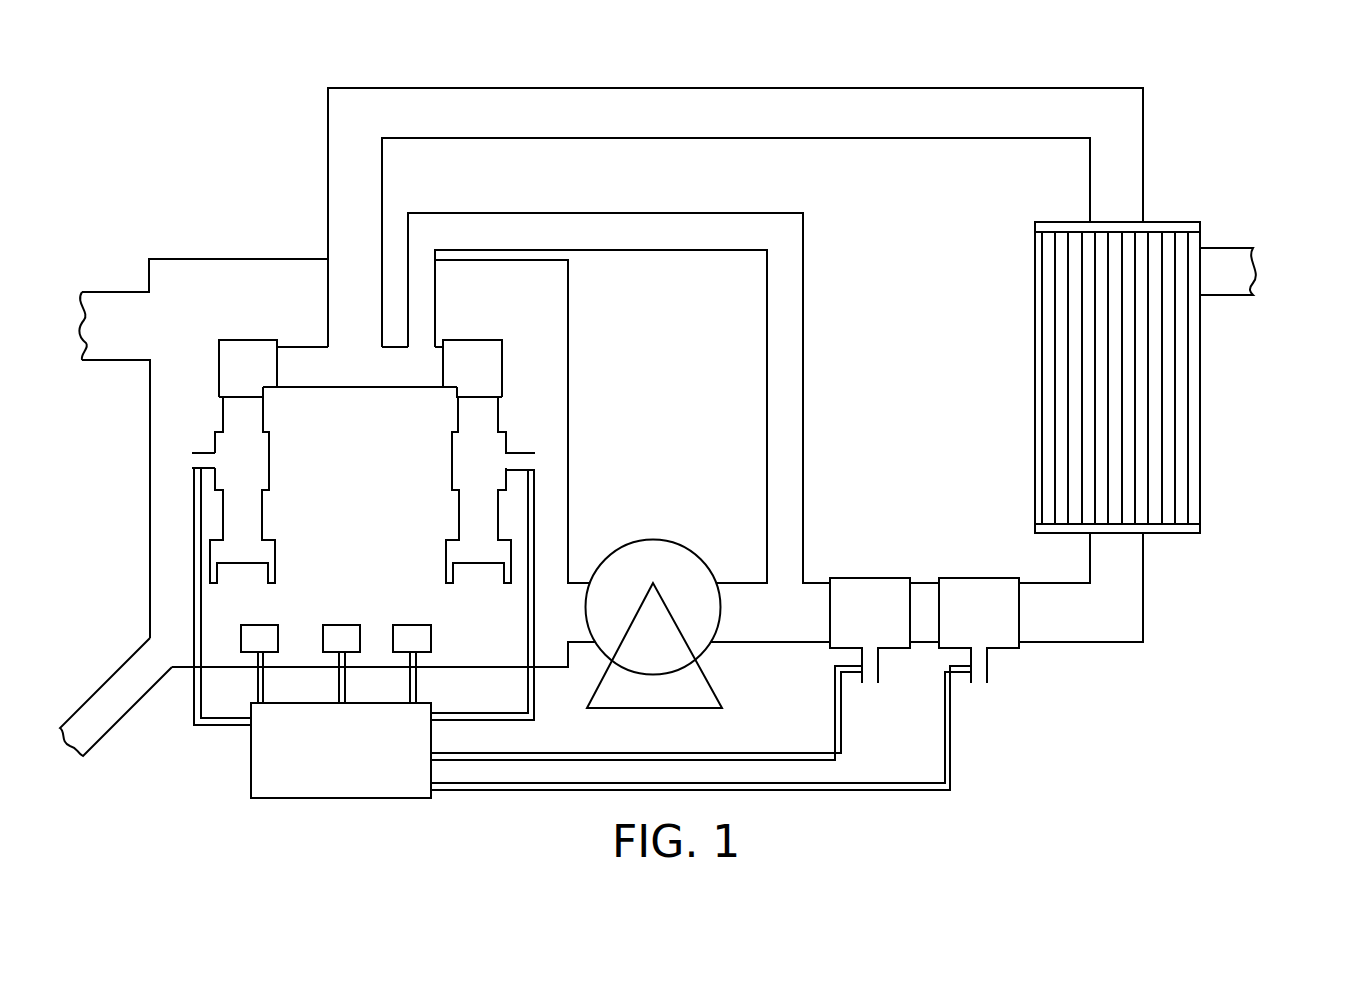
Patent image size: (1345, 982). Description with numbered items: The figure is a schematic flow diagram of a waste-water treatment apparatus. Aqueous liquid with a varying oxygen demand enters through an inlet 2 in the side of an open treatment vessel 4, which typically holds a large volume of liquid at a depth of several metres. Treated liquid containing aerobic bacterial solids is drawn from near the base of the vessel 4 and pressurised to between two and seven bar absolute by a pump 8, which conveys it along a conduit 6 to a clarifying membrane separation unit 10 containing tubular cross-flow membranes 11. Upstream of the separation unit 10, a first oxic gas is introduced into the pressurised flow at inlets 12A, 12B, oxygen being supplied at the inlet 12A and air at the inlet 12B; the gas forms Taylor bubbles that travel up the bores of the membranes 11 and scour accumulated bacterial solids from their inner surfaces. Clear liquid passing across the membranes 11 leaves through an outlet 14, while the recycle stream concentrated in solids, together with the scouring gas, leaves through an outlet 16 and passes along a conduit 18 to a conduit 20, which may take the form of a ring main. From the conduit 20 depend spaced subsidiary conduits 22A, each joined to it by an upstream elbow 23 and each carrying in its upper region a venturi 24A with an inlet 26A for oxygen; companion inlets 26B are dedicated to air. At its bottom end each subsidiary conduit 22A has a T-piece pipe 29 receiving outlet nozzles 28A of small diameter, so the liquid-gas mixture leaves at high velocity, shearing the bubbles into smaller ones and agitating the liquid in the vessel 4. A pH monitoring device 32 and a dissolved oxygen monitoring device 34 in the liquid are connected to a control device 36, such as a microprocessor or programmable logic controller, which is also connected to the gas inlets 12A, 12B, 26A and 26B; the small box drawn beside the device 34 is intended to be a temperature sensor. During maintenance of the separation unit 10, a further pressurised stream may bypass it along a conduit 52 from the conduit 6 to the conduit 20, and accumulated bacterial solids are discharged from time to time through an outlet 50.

The inlet 2 is at (92, 318).
The treatment vessel 4 is at (148, 498).
The conduit 6 is at (762, 627).
The pump 8 is at (668, 556).
The membrane separation unit 10 is at (1200, 387).
The tubular membranes 11 is at (1183, 462).
The inlet 12A is at (873, 665).
The inlet 12B is at (983, 663).
The outlet 14 is at (1240, 273).
The outlet 16 is at (1120, 222).
The conduit 18 is at (704, 105).
The conduit 20 is at (355, 368).
The subsidiary conduit 22A is at (254, 412).
The upstream elbow 23 is at (249, 353).
The venturi 24A is at (254, 466).
The inlet 26A is at (203, 456).
The inlet 26B is at (518, 456).
The outlet nozzle 28A is at (272, 572).
The T-piece pipe 29 is at (250, 541).
The pH monitoring device 32 is at (258, 638).
The dissolved oxygen monitoring device 34 is at (344, 638).
The control device 36 is at (414, 638).
The outlet 50 is at (118, 686).
The conduit 52 is at (793, 410).